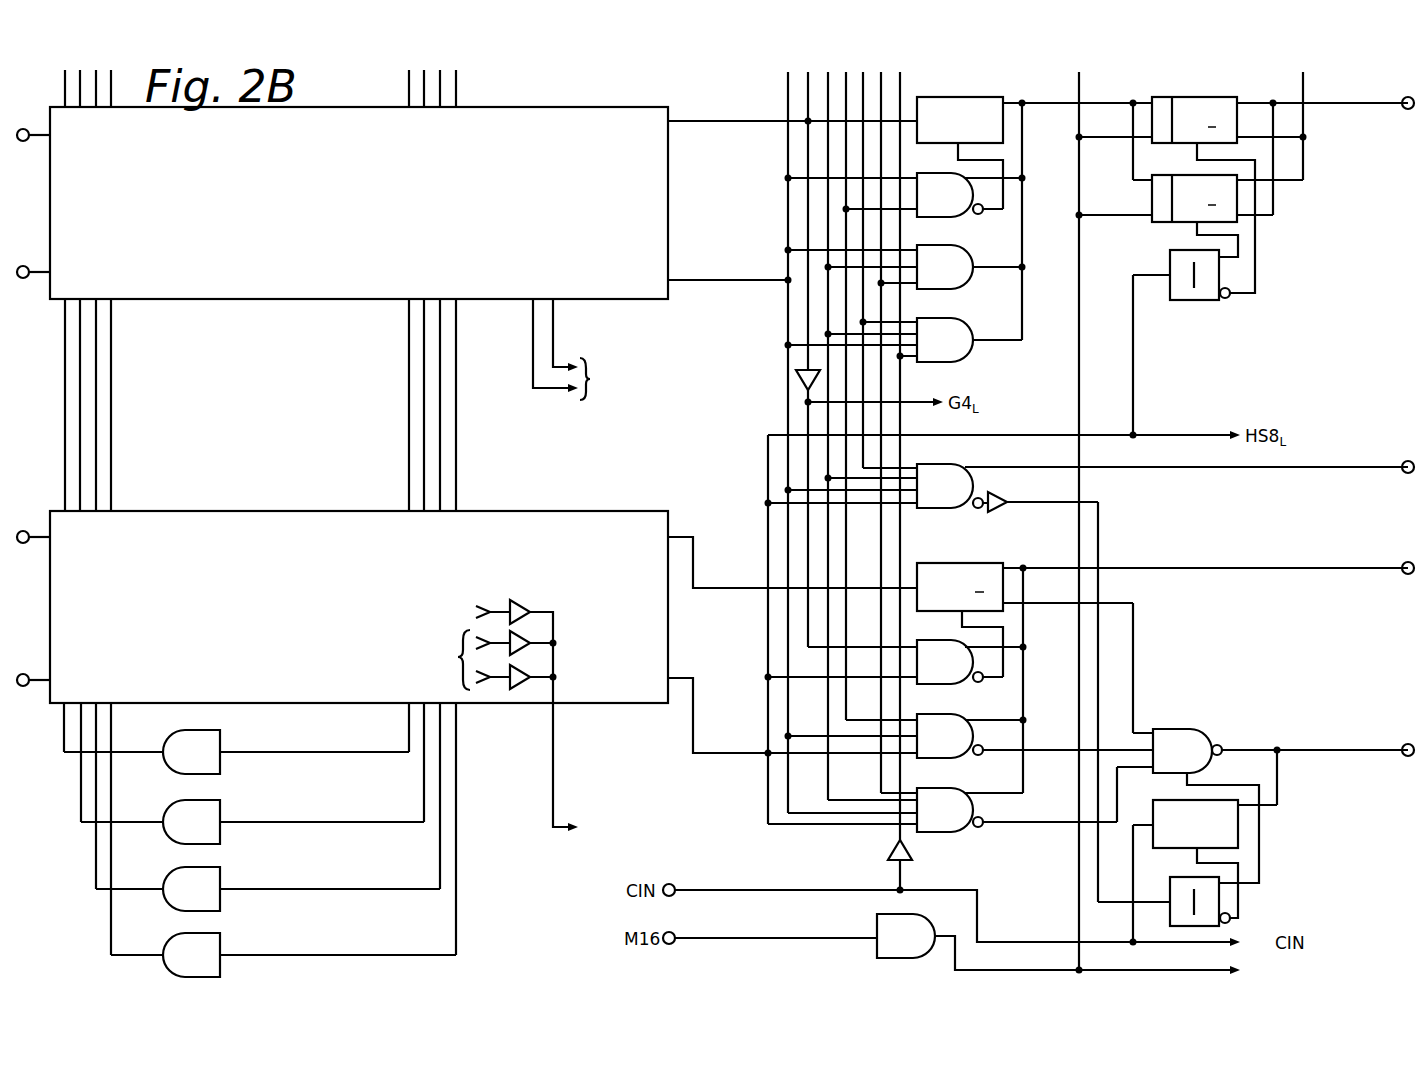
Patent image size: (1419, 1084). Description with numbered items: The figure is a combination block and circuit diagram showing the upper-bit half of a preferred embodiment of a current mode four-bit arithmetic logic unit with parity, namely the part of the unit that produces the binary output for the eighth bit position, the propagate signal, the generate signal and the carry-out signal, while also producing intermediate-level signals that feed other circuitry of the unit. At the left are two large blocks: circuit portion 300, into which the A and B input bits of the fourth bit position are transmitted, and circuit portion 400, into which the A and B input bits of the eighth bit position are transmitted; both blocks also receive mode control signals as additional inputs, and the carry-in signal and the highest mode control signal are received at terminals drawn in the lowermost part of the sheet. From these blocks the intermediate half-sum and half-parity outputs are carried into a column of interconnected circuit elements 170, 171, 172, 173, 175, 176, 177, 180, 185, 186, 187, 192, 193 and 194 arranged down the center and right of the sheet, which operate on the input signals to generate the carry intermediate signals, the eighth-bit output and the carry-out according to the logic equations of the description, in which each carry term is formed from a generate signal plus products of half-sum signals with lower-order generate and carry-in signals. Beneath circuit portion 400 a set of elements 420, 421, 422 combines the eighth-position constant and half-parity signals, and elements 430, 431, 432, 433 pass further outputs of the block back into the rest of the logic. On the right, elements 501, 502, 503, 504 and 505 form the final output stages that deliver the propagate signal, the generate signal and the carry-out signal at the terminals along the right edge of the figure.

The circuit portion 300 is at (583, 104).
The circuit portion 400 is at (572, 510).
The Y/Z logic block 170 is at (953, 96).
The AND/YZ logic block 171 is at (1178, 96).
The AND/YZ logic block 172 is at (1184, 175).
The inverter block 173 is at (1185, 250).
The NAND gate 175 is at (953, 172).
The AND gate 176 is at (953, 245).
The AND gate 177 is at (953, 318).
The Y/Z logic block 180 is at (953, 563).
The NAND gate 185 is at (953, 639).
The NAND gate 186 is at (953, 713).
The NAND gate 187 is at (953, 787).
The inverter 192 is at (796, 380).
The inverter 193 is at (889, 853).
The AND gate 194 is at (876, 922).
The buffer 420 is at (532, 601).
The buffer 421 is at (546, 641).
The buffer 422 is at (548, 675).
The AND gate 430 is at (170, 739).
The AND gate 431 is at (170, 809).
The AND gate 432 is at (170, 875).
The AND gate 433 is at (170, 941).
The NAND gate 501 is at (1188, 728).
The Y/Z logic block 502 is at (1188, 800).
The inverter block 503 is at (1188, 877).
The NAND gate 504 is at (955, 463).
The inverter 505 is at (994, 511).